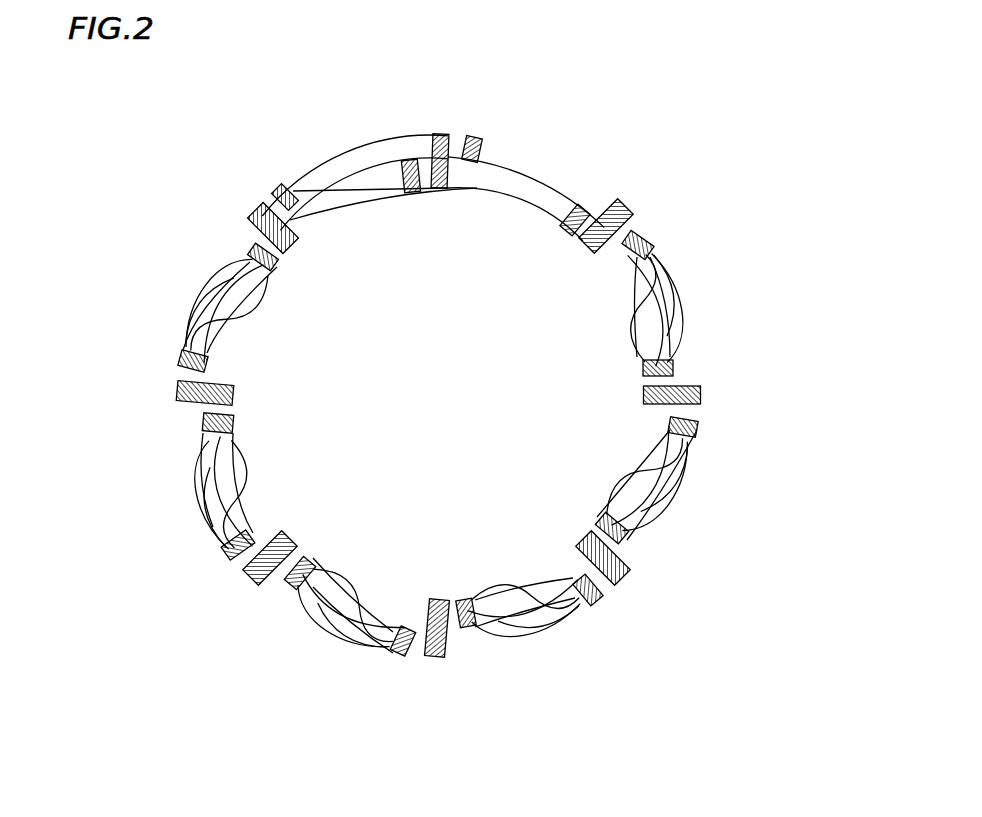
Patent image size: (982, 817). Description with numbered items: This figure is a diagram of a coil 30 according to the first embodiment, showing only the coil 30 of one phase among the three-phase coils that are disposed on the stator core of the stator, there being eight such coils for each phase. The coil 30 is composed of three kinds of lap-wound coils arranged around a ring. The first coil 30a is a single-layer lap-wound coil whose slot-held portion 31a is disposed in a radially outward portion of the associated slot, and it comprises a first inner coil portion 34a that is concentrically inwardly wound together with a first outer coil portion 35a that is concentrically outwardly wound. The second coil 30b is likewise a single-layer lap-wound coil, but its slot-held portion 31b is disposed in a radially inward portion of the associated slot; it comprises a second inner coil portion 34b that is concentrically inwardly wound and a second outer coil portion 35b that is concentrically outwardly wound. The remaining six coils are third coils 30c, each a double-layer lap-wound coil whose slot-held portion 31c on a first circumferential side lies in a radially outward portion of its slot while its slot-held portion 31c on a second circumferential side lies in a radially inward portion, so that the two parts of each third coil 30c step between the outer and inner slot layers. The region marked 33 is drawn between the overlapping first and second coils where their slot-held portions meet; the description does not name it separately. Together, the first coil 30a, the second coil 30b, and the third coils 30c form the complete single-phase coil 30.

The coil 30 is at (745, 165).
The first coil 30a is at (343, 177).
The second coil 30b is at (530, 187).
The third coil 30c is at (200, 323).
The slot-held portion 31a is at (334, 150).
The slot-held portion 31b is at (350, 66).
The slot-held portion 31c is at (647, 233).
The gap 33 is at (343, 192).
The first inner coil portion 34a is at (283, 185).
The second inner coil portion 34b is at (437, 134).
The first outer coil portion 35a is at (254, 208).
The second outer coil portion 35b is at (407, 160).